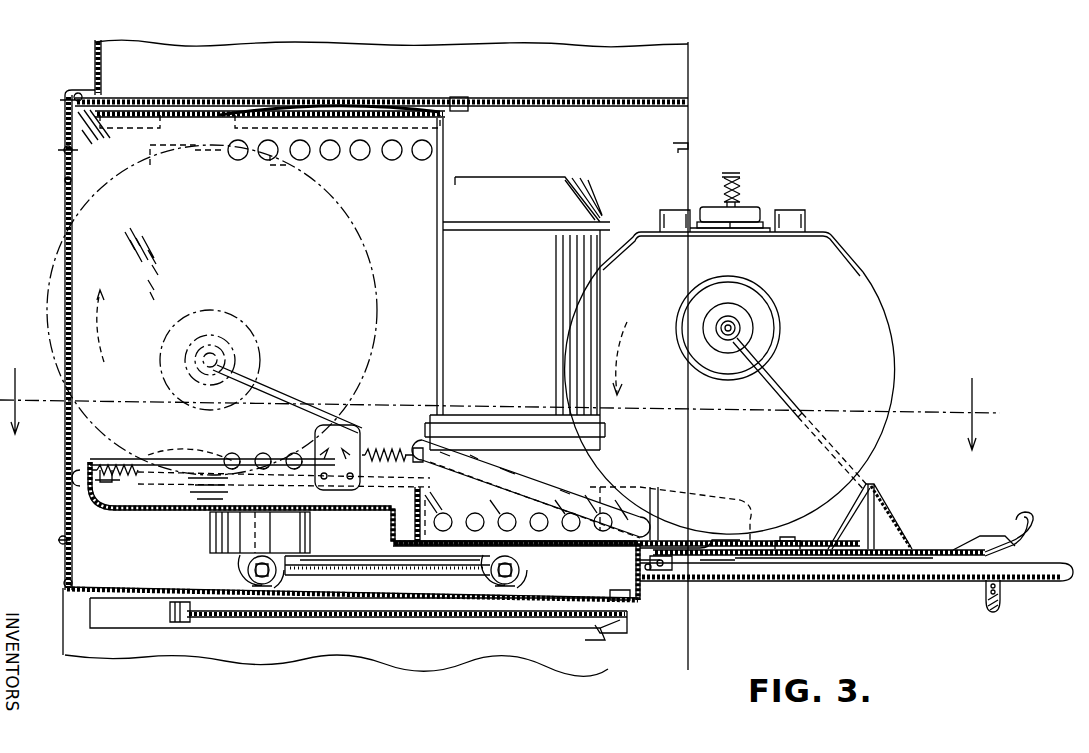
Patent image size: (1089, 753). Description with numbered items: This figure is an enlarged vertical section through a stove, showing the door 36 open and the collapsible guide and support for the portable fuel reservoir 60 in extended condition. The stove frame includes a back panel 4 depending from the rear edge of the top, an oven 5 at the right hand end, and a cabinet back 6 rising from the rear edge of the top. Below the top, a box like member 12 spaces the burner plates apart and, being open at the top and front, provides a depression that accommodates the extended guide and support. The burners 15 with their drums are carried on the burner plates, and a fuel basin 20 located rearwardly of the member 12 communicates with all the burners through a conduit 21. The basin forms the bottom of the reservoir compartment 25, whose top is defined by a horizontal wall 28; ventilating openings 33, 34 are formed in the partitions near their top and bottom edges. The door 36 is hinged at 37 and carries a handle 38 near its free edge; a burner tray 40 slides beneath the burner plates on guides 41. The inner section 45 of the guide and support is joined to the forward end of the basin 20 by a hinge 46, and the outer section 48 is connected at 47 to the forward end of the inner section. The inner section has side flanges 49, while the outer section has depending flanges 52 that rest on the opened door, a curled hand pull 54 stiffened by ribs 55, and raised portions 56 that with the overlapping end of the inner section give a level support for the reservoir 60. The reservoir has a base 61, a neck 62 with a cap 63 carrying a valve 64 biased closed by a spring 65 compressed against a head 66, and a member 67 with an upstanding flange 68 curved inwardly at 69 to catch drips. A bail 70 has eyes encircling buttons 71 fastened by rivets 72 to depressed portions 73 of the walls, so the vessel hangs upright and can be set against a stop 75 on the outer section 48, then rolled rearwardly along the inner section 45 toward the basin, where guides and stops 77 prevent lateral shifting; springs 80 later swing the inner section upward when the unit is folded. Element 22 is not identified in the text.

The back panel 4 is at (62, 162).
The oven 5 is at (430, 65).
The cabinet back 6 is at (101, 80).
The box like member 12 is at (580, 542).
The burners 15 is at (210, 530).
The fuel basin 20 is at (134, 506).
The pipe or conduit 21 is at (340, 562).
The rollers 22 is at (262, 558).
The reservoir compartment 25 is at (412, 188).
The horizontal wall 28 is at (245, 113).
The ventilating openings 33 is at (333, 155).
The ventilating openings 34 is at (294, 455).
The door 36 is at (860, 580).
The hinge 37 is at (662, 565).
The handle 38 is at (1000, 607).
The burner tray 40 is at (380, 615).
The guides 41 is at (135, 610).
The inner section 45 is at (540, 495).
The hinge 46 is at (392, 455).
The pivotal connection 47 is at (648, 568).
The outer section 48 is at (930, 550).
The side flanges 49 is at (580, 490).
The depending flanges 52 is at (838, 562).
The hand pull 54 is at (1022, 512).
The ribs 55 is at (973, 545).
The raised portions 56 is at (790, 545).
The portable fuel reservoir 60 is at (870, 333).
The base 61 is at (697, 540).
The neck 62 is at (745, 230).
The cap 63 is at (762, 212).
The valve 64 is at (745, 212).
The spring 65 is at (742, 195).
The head 66 is at (731, 172).
The member 67 is at (640, 233).
The upstanding flange 68 is at (812, 210).
The curved portion 69 is at (665, 208).
The bail 70 is at (800, 403).
The buttons 71 is at (762, 310).
The rivets 72 is at (718, 352).
The depressed portions 73 is at (762, 338).
The stop 75 is at (888, 500).
The combined guides and stops 77 is at (345, 440).
The springs 80 is at (148, 458).